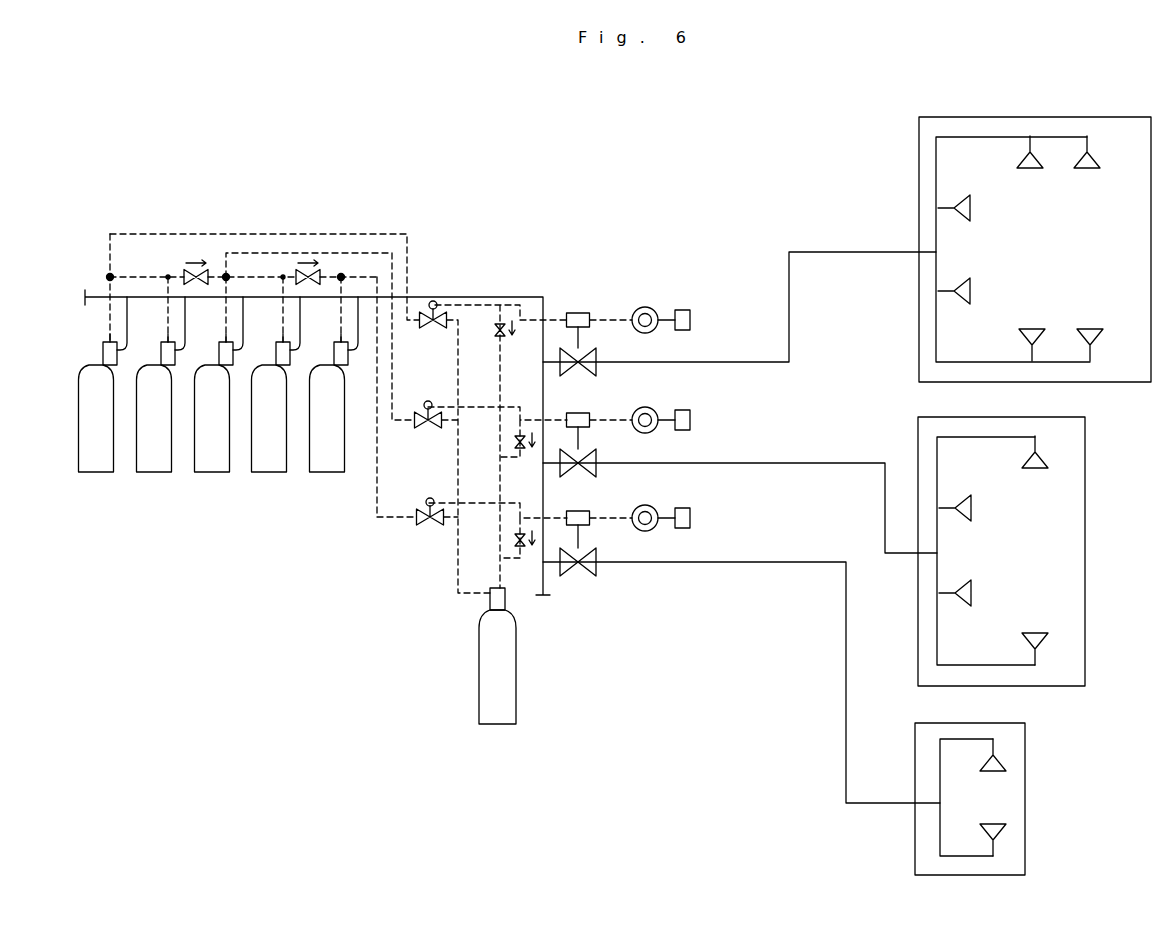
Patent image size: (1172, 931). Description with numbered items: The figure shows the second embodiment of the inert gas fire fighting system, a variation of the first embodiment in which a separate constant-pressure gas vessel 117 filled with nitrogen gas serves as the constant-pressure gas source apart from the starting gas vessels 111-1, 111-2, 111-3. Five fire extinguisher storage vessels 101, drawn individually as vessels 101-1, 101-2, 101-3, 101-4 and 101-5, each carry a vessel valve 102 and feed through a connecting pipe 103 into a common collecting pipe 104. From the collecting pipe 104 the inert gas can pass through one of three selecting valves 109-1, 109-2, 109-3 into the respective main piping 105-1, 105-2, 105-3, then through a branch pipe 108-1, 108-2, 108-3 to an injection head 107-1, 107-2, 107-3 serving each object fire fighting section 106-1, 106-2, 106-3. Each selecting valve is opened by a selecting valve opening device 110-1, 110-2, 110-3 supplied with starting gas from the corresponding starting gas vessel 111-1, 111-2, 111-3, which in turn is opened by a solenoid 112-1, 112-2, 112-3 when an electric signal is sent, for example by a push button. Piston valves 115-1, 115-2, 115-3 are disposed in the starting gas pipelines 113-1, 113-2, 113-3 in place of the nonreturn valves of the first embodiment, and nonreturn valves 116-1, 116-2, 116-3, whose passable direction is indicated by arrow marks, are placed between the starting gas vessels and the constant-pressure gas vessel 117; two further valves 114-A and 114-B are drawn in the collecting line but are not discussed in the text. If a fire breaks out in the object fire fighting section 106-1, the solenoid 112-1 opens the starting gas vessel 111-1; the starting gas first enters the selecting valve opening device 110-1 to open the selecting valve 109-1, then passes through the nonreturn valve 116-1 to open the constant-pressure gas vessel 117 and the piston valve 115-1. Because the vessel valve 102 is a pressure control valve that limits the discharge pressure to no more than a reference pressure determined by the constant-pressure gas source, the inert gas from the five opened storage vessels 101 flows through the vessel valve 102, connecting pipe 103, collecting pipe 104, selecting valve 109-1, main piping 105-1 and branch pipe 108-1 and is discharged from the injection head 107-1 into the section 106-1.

The fire extinguisher storage vessel 101 is at (74, 438).
The fire extinguisher storage vessel 101-1 is at (100, 467).
The fire extinguisher storage vessel 101-2 is at (158, 467).
The fire extinguisher storage vessel 101-3 is at (216, 467).
The fire extinguisher storage vessel 101-4 is at (273, 467).
The fire extinguisher storage vessel 101-5 is at (331, 467).
The vessel valve 102 is at (103, 350).
The connecting pipe 103 is at (127, 317).
The collecting pipe 104 is at (142, 300).
The main piping 105-1 is at (791, 350).
The main piping 105-2 is at (814, 463).
The main piping 105-3 is at (814, 561).
The object fire fighting section 106-1 is at (919, 192).
The object fire fighting section 106-2 is at (918, 432).
The object fire fighting section 106-3 is at (915, 740).
The injection head 107-1 is at (1090, 172).
The injection head 107-2 is at (1045, 466).
The injection head 107-3 is at (1000, 762).
The branch pipe 108-1 is at (990, 138).
The branch pipe 108-2 is at (988, 438).
The branch pipe 108-3 is at (943, 778).
The selecting valve 109-1 is at (560, 366).
The selecting valve 109-2 is at (584, 470).
The selecting valve 109-3 is at (580, 578).
The selecting valve opening device 110-1 is at (575, 312).
The selecting valve opening device 110-2 is at (584, 406).
The selecting valve opening device 110-3 is at (590, 526).
The starting gas vessel 111-1 is at (656, 330).
The starting gas vessel 111-2 is at (656, 430).
The starting gas vessel 111-3 is at (652, 530).
The solenoid 112-1 is at (691, 320).
The solenoid 112-2 is at (691, 414).
The solenoid 112-3 is at (691, 518).
The starting gas pipeline 113-1 is at (398, 296).
The starting gas pipeline 113-2 is at (405, 235).
The starting gas pipeline 113-3 is at (358, 275).
The check valve 114-A is at (212, 272).
The check valve 114-B is at (318, 270).
The piston valve 115-1 is at (438, 328).
The piston valve 115-2 is at (434, 430).
The piston valve 115-3 is at (434, 526).
The nonreturn valve 116-1 is at (498, 323).
The nonreturn valve 116-2 is at (522, 452).
The nonreturn valve 116-3 is at (525, 550).
The constant-pressure gas vessel 117 is at (492, 717).